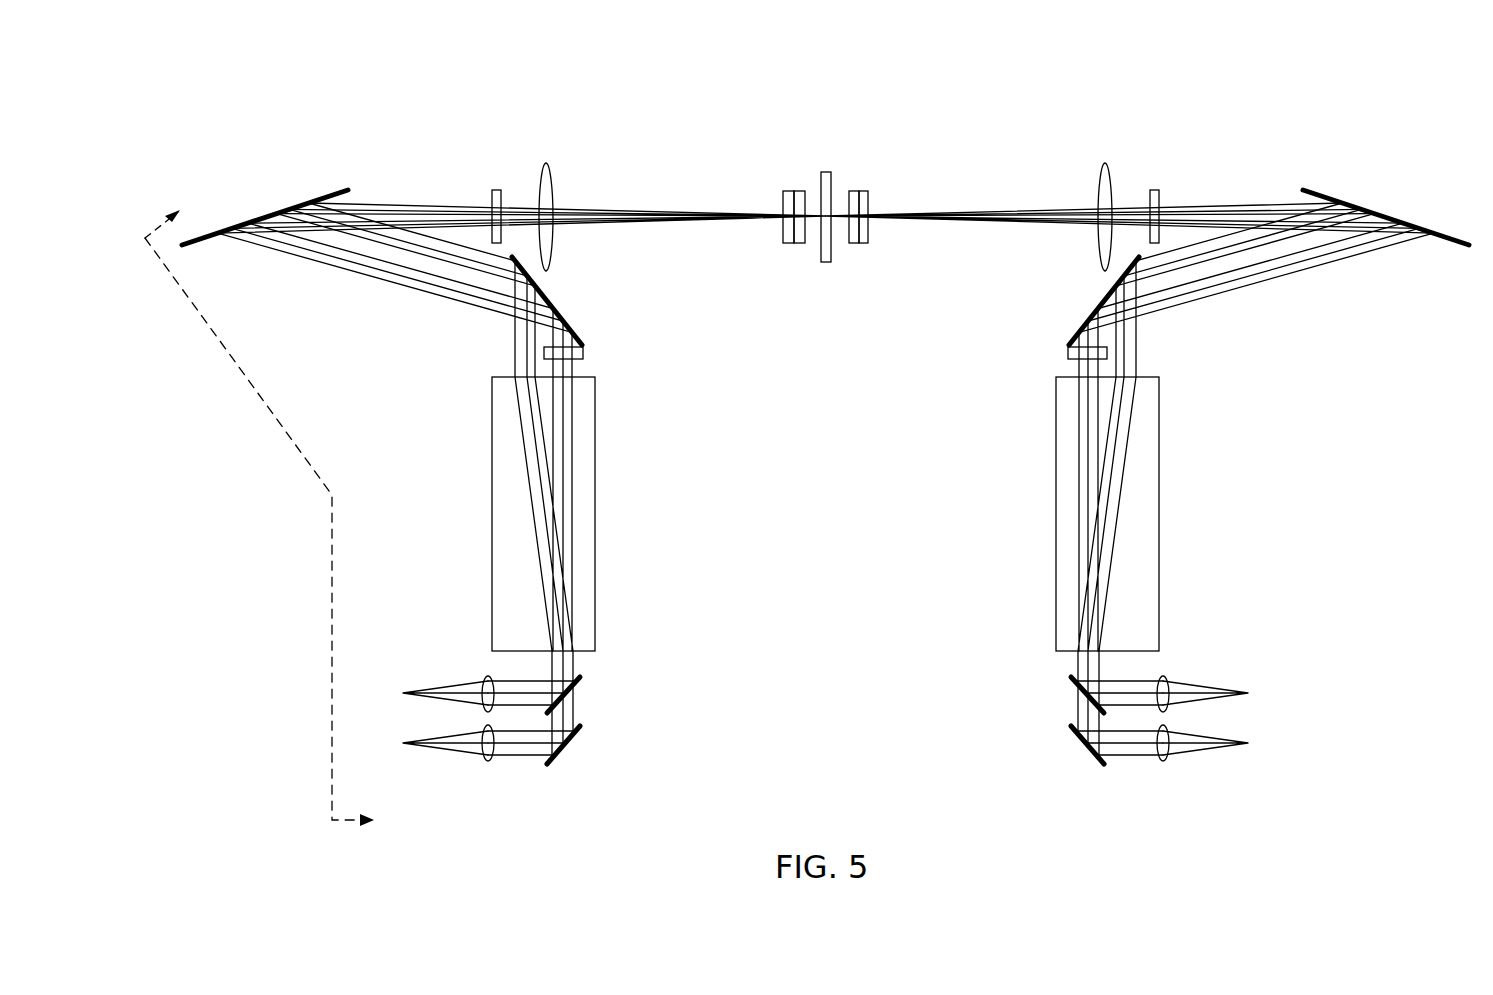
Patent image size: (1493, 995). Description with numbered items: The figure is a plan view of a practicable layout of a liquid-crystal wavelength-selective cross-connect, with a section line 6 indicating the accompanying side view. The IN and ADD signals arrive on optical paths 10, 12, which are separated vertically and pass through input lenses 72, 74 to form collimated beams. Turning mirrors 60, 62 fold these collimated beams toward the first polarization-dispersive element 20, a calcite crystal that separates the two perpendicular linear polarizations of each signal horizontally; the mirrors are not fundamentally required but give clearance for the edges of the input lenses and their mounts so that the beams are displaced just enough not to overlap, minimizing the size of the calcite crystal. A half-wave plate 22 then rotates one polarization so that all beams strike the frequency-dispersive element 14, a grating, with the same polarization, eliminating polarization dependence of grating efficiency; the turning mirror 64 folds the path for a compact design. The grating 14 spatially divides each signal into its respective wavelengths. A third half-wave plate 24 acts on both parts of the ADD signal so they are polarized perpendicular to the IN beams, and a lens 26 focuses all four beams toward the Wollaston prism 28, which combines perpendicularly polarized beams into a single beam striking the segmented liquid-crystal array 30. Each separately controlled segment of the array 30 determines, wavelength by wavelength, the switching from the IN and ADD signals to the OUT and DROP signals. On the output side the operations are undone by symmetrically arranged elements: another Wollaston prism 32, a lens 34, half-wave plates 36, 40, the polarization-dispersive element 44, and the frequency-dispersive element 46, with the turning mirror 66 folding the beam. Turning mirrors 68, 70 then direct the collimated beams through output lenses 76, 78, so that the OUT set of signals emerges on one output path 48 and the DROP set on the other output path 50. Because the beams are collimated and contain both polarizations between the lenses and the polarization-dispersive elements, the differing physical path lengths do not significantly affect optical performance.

The section line 6- 6 is at (259, 524).
The IN optical path 10 is at (427, 744).
The ADD optical path 12 is at (427, 694).
The frequency-dispersive element 14 is at (276, 213).
The first polarization-dispersive element 20 is at (597, 503).
The half-wave plate 22 is at (583, 352).
The third half-wave plate 24 is at (498, 190).
The lens 26 is at (548, 164).
The Wollaston prism 28 is at (788, 190).
The segmented liquid-crystal array 30 is at (826, 172).
The Wollaston prism 32 is at (863, 191).
The lens 34 is at (1107, 165).
The half-wave plate 36 is at (1156, 190).
The half-wave plate 40 is at (1068, 351).
The polarization-dispersive element 44 is at (1055, 502).
The frequency-dispersive element 46 is at (1376, 211).
The output path 48 is at (1223, 743).
The output path 50 is at (1223, 693).
The turning mirror 60 is at (580, 727).
The turning mirror 62 is at (580, 677).
The turning mirror 64 is at (563, 317).
The turning mirror 66 is at (1087, 316).
The turning mirror 68 is at (1067, 728).
The turning mirror 70 is at (1067, 680).
The input lens 72 is at (487, 762).
The input lens 74 is at (488, 675).
The output lens 76 is at (1162, 762).
The output lens 78 is at (1162, 674).